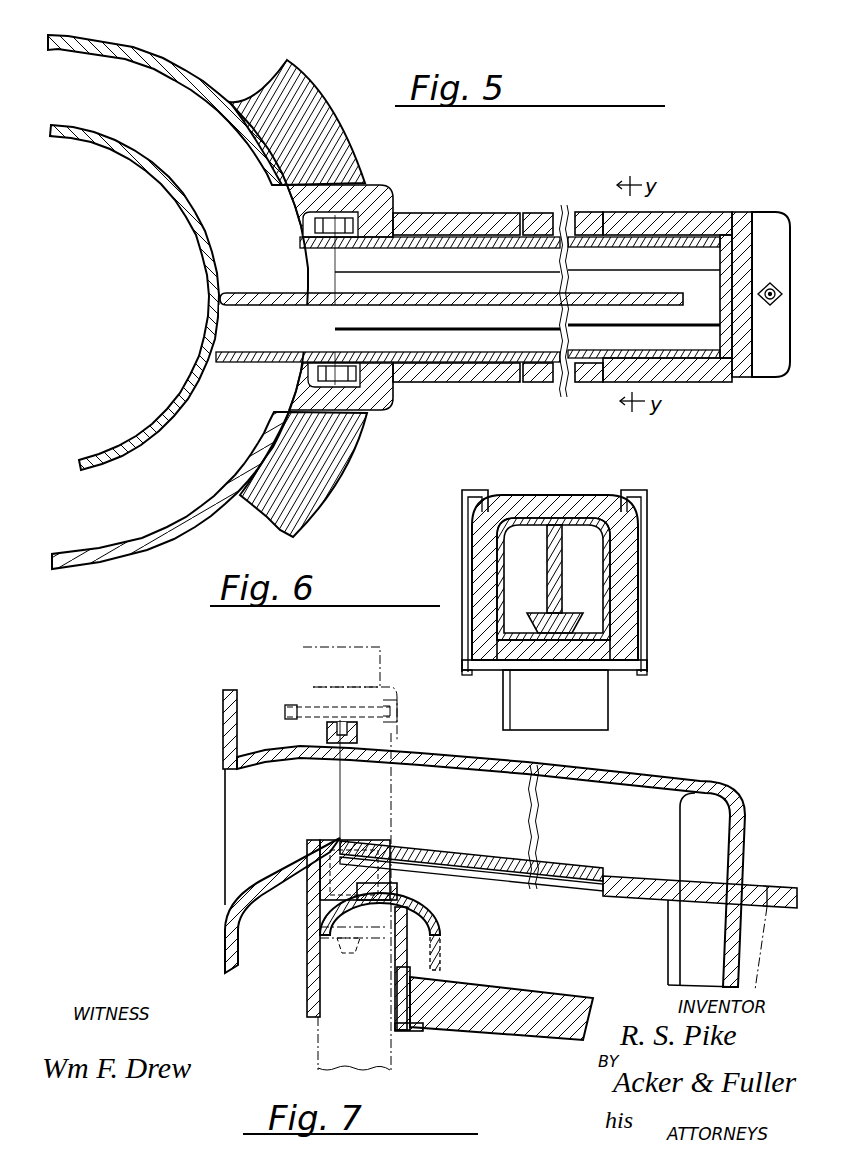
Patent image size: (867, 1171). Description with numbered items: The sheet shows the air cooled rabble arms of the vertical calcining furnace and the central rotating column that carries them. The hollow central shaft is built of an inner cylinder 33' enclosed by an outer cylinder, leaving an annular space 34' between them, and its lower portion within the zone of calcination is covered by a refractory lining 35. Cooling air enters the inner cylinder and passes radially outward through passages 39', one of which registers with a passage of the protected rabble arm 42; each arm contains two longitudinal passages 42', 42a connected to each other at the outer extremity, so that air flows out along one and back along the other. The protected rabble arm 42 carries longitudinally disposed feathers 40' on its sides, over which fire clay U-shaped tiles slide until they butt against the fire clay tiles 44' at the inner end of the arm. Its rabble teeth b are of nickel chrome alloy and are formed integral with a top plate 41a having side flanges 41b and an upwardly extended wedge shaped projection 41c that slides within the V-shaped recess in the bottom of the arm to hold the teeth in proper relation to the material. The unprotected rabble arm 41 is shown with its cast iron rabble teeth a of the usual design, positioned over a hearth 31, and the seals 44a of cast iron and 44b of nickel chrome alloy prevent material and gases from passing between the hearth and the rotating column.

In FIG. 7, the hearth 31 is at (477, 997).
In FIG. 5, the inner cylinder 33' is at (134, 297).
In FIG. 5, the annular space 34' is at (167, 110).
In FIG. 7, the annular space 34' is at (282, 905).
In FIG. 5, the refractory lining 35 is at (317, 500).
In FIG. 5, the passage 39' is at (468, 316).
In FIG. 7, the passage 39' is at (255, 837).
In FIG. 6, the feather 40' is at (557, 577).
In FIG. 7, the unprotected rabble arm 41 is at (667, 780).
In FIG. 6, the top plate 41a is at (490, 672).
In FIG. 6, the side flange 41b is at (640, 665).
In FIG. 6, the wedge shaped projection 41c is at (557, 645).
In FIG. 5, the protected rabble arm 42 is at (698, 271).
In FIG. 6, the protected rabble arm 42 is at (661, 591).
In FIG. 6, the longitudinal passage 42' is at (606, 575).
In FIG. 5, the longitudinal passage 42a is at (623, 333).
In FIG. 6, the longitudinal passage 42a is at (530, 540).
In FIG. 5, the fire clay tile 44' is at (357, 289).
In FIG. 7, the fire clay tile 44' is at (368, 858).
In FIG. 7, the seal 44a is at (410, 1027).
In FIG. 7, the seal 44b is at (437, 950).
In FIG. 7, the rabble tooth a is at (737, 967).
In FIG. 6, the rabble tooth b is at (585, 697).